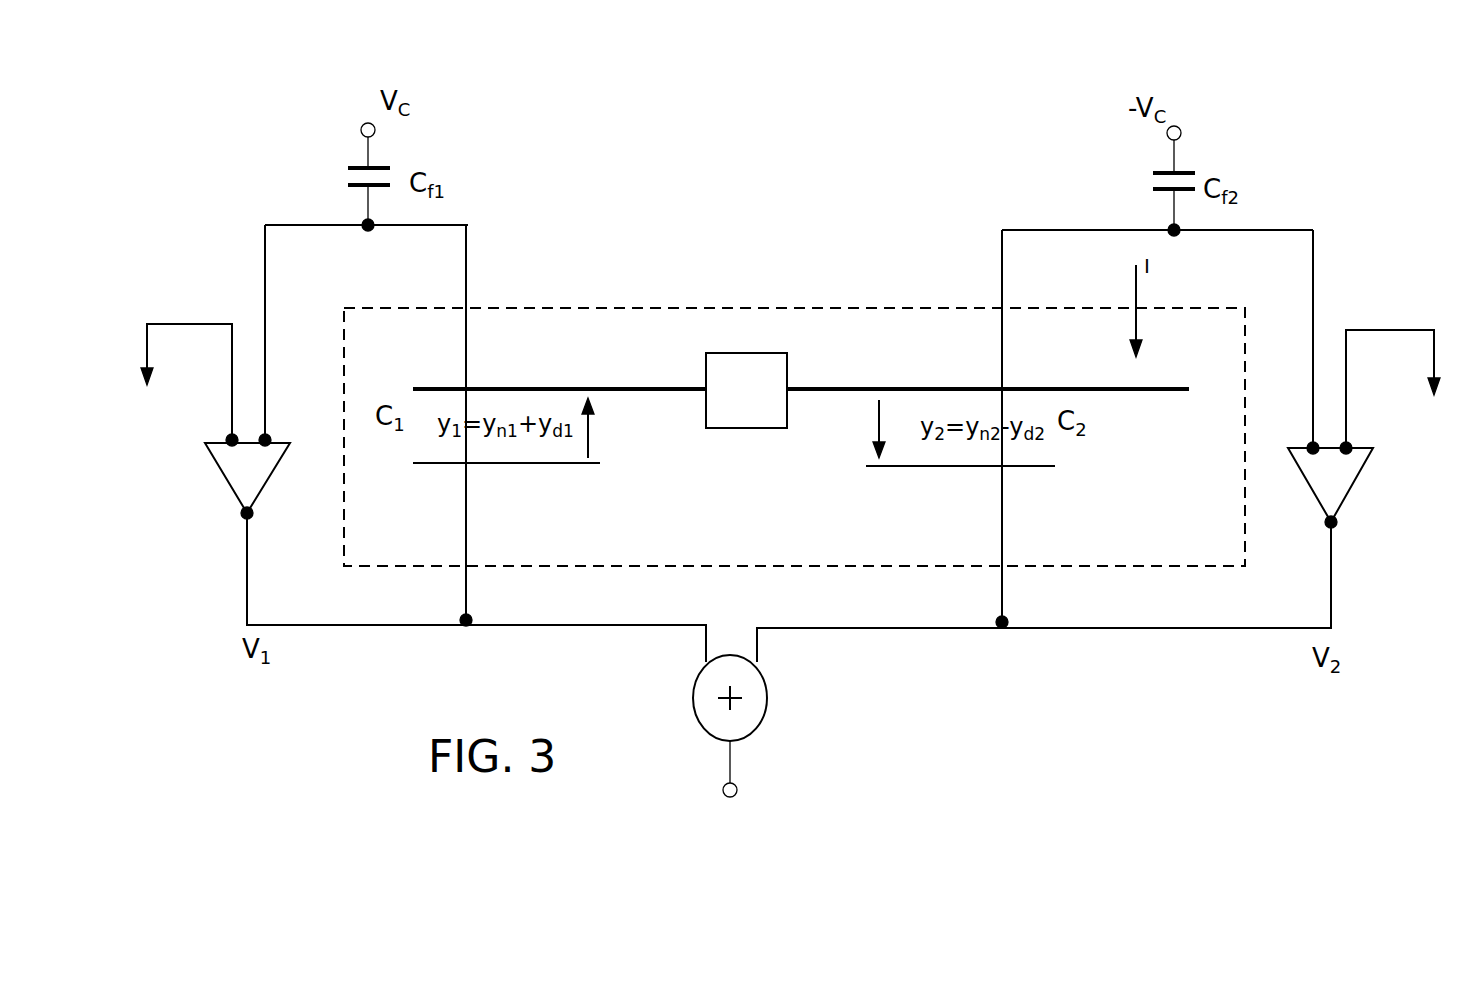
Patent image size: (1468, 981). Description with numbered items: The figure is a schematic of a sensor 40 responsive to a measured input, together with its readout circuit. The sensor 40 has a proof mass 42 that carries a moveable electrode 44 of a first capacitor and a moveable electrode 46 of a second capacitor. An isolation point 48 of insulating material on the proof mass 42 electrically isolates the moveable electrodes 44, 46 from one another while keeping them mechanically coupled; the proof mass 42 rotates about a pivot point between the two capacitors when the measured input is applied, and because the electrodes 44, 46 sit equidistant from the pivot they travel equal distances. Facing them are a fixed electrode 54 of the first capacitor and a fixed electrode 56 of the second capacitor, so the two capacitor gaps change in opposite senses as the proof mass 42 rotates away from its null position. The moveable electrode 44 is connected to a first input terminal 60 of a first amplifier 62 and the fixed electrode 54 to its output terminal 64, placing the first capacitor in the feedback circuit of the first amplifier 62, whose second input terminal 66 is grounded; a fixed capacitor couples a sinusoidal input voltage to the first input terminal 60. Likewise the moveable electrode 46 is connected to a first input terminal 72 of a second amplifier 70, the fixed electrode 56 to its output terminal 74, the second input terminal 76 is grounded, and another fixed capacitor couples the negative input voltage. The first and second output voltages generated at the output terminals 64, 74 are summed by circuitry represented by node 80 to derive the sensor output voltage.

The sensor 40 is at (1224, 556).
The proof mass 42 is at (801, 371).
The moveable electrode 44 is at (600, 386).
The moveable electrode 46 is at (1108, 386).
The isolation point 48 is at (787, 353).
The fixed electrode 54 is at (428, 465).
The fixed electrode 56 is at (1042, 468).
The first input terminal 60 is at (268, 432).
The first amplifier 62 is at (208, 505).
The output terminal 64 is at (253, 518).
The second input terminal 66 is at (228, 432).
The second amplifier 70 is at (1372, 510).
The first input terminal 72 is at (1308, 440).
The output terminal 74 is at (1325, 526).
The second input terminal 76 is at (1350, 440).
The node 80 is at (768, 698).